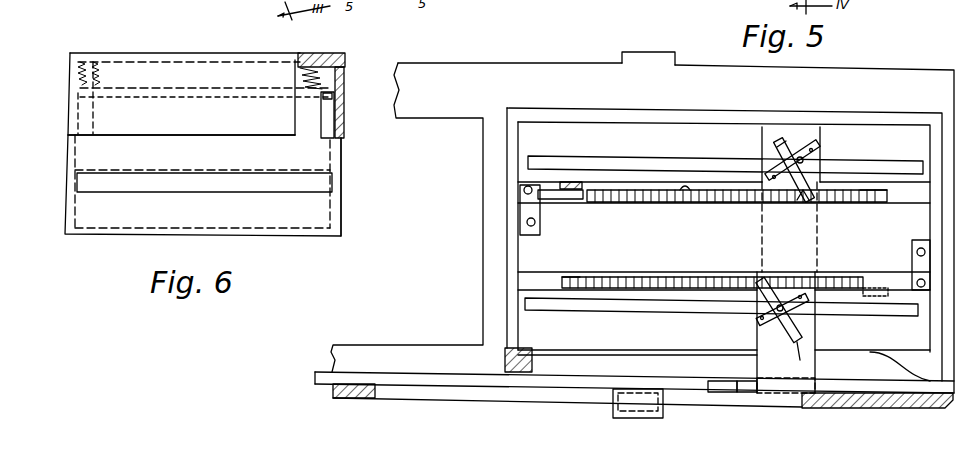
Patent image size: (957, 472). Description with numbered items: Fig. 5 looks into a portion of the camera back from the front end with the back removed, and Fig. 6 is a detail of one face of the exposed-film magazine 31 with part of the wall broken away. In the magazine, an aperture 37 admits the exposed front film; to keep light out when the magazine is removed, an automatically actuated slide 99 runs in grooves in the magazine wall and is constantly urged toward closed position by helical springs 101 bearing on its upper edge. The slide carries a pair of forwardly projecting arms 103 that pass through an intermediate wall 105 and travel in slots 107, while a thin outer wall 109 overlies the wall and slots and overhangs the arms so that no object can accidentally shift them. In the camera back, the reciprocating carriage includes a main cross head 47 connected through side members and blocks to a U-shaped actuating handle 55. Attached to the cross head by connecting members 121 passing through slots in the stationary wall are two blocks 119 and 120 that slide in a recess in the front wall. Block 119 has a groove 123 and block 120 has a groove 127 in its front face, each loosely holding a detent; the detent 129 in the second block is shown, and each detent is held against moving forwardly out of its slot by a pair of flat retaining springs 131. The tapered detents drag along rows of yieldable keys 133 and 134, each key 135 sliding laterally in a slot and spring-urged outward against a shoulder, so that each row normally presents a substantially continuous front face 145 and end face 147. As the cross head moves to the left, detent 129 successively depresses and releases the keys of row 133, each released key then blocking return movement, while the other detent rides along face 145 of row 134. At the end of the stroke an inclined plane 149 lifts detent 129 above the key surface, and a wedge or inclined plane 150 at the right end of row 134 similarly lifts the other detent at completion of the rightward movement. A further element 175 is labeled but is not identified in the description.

In FIG. 6, the exposed-film magazine 31 is at (203, 131).
In FIG. 6, the aperture 37 is at (82, 181).
In FIG. 5, the main cross head 47 is at (807, 250).
In FIG. 5, the U-shaped actuating handle 55 is at (648, 42).
In FIG. 6, the slide 99 is at (93, 156).
In FIG. 6, the helical springs 101 is at (88, 58).
In FIG. 6, the forwardly projecting arms 103 is at (340, 80).
In FIG. 6, the intermediate wall 105 is at (318, 154).
In FIG. 6, the slots 107 is at (337, 118).
In FIG. 6, the outer wall 109 is at (267, 127).
In FIG. 5, the block 119 is at (812, 338).
In FIG. 5, the block 120 is at (821, 147).
In FIG. 5, the connecting members 121 is at (641, 166).
In FIG. 5, the groove 123 is at (797, 343).
In FIG. 5, the groove 127 is at (786, 140).
In FIG. 5, the detent 129 is at (801, 201).
In FIG. 5, the flat retaining springs 131 is at (776, 172).
In FIG. 5, the row of yieldable keys 133 is at (862, 201).
In FIG. 5, the row of yieldable keys 134 is at (869, 275).
In FIG. 5, the key 135 is at (598, 289).
In FIG. 5, the front face 145 is at (723, 201).
In FIG. 5, the end face 147 is at (685, 191).
In FIG. 5, the inclined plane 149 is at (560, 190).
In FIG. 5, the wedge or inclined plane 150 is at (893, 296).
In FIG. 5, the lower latch lever 175 is at (762, 279).